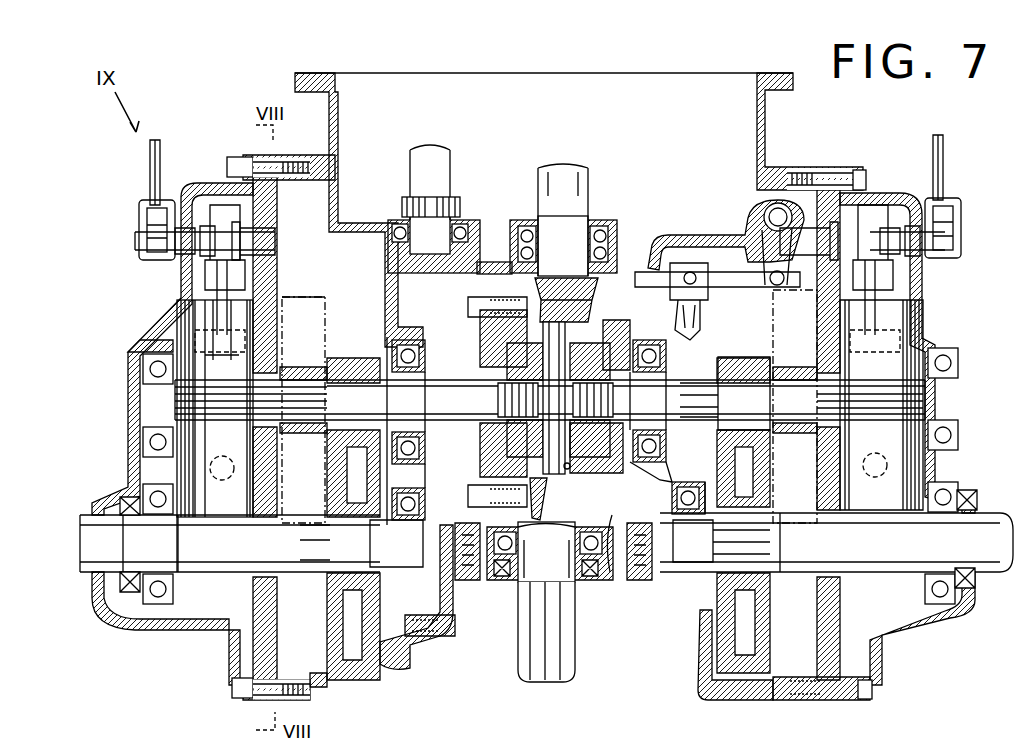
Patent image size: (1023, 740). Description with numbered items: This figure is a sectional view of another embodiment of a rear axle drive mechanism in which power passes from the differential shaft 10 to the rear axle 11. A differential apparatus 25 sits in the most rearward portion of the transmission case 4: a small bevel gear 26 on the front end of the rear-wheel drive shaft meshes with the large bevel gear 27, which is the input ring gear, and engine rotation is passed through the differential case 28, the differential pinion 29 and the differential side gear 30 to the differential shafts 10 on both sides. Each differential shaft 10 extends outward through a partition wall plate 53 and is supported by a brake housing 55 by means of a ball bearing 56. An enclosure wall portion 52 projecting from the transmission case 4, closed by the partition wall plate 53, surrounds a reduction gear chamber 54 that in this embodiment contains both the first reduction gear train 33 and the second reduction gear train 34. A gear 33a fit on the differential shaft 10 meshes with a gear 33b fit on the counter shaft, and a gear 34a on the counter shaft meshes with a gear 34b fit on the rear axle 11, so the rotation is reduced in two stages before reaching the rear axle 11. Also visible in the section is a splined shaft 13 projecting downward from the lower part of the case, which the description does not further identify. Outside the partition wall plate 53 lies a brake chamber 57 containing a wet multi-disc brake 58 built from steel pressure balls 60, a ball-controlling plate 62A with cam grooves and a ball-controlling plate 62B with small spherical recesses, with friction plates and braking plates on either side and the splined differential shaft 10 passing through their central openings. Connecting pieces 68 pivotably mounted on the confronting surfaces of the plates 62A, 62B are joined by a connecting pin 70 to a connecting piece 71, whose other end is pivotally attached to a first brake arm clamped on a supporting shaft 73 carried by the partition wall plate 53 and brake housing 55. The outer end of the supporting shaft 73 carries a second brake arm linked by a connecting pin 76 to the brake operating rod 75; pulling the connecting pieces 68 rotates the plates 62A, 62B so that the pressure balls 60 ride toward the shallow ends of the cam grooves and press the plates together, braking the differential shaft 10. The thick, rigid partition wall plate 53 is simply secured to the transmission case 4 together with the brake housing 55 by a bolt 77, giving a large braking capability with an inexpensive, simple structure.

The transmission case 4 is at (765, 128).
The differential shaft 10 is at (463, 408).
The rear axle 11 is at (237, 555).
The output shaft 13 is at (576, 652).
The differential apparatus 25 is at (612, 572).
The small bevel gear 26 is at (594, 288).
The large bevel gear 27 is at (542, 506).
The differential case 28 is at (483, 333).
The differential pinion 29 is at (585, 330).
The differential side gear 30 is at (482, 438).
The first reduction gear train 33 is at (310, 532).
The gear 33a is at (300, 366).
The gear 33b is at (326, 326).
The second reduction gear train 34 is at (308, 588).
The gear 34a is at (345, 352).
The gear 34b is at (355, 665).
The enclosure wall portion 52 is at (322, 686).
The partition wall plate 53 is at (278, 205).
The reduction gear chamber 54 is at (580, 216).
The brake housing 55 is at (128, 352).
The ball bearing 56 is at (143, 440).
The brake chamber 57 is at (250, 183).
The wet multi-disc brake 58 is at (922, 290).
The pressure ball 60 is at (222, 500).
The ball-controlling plate 62A is at (245, 480).
The ball-controlling plate 62B is at (185, 515).
The connecting piece 68 is at (180, 318).
The connecting pin 70 is at (205, 275).
The connecting piece 71 is at (225, 248).
The supporting shaft 73 is at (270, 236).
The brake operating rod 75 is at (150, 160).
The connecting pin 76 is at (139, 240).
The bolt 77 is at (228, 160).